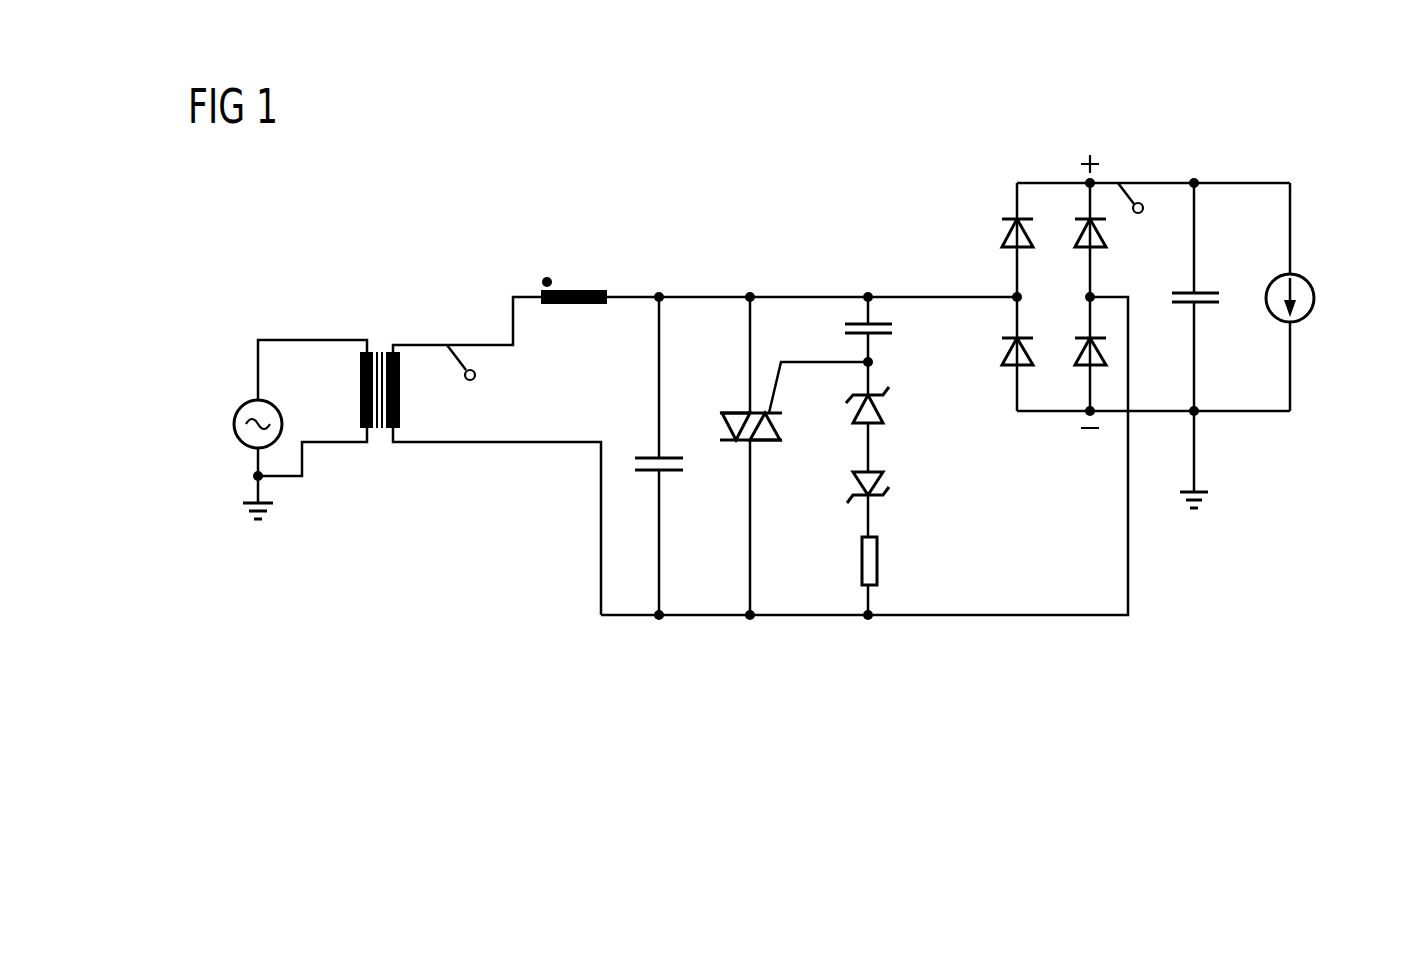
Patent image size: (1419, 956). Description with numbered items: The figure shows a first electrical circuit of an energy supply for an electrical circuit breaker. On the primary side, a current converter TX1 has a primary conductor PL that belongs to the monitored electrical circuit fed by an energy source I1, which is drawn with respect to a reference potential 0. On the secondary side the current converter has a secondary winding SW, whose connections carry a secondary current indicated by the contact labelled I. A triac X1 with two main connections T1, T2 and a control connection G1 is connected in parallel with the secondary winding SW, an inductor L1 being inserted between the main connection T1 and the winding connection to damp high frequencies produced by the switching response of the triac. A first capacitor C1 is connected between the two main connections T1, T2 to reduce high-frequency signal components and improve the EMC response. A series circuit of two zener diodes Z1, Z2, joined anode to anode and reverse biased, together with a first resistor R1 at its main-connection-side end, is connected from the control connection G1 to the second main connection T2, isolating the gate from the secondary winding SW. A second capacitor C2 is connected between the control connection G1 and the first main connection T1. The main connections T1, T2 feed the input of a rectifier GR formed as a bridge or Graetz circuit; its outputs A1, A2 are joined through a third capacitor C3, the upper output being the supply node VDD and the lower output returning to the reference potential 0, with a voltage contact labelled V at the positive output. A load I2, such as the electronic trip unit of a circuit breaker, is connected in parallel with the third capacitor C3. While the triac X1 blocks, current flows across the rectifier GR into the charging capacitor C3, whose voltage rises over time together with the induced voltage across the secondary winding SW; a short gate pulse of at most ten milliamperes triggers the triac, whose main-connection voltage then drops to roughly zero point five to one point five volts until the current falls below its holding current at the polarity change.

The energy source I1 is at (240, 405).
The ground / reference potential 0 is at (735, 508).
The current converter TX1 is at (380, 365).
The primary conductor PL is at (359, 394).
The secondary winding SW is at (401, 410).
The current (switch) in secondary circuit I is at (497, 456).
The inductor L1 is at (577, 289).
The first capacitor C1 is at (650, 456).
The first main connection T1 is at (753, 279).
The second main connection T2 is at (864, 481).
The triac X1 is at (738, 410).
The control connection G1 is at (821, 371).
The second capacitor C2 is at (894, 328).
The zener diode Z1 is at (886, 404).
The zener diode Z2 is at (886, 480).
The first resistor R1 is at (878, 562).
The rectifier GR is at (1055, 177).
The rectifier output A1 is at (1170, 169).
The rectifier output A2 is at (1170, 449).
The voltage (switch) at output V is at (1143, 205).
The supply voltage node VDD is at (1234, 221).
The third capacitor C3 is at (1205, 290).
The load I2 is at (1307, 280).